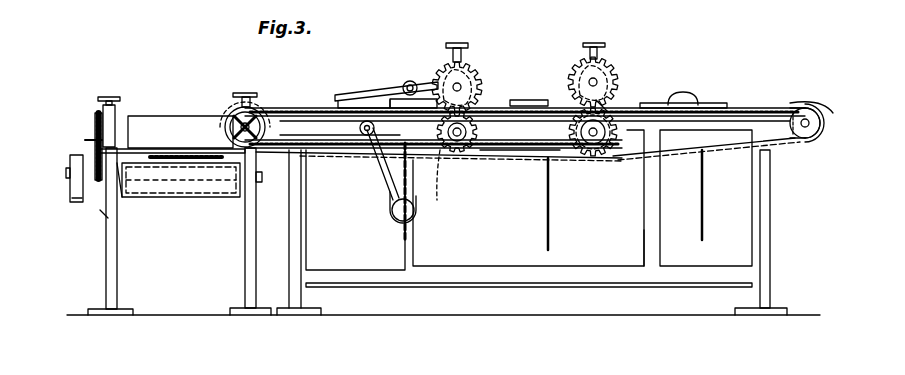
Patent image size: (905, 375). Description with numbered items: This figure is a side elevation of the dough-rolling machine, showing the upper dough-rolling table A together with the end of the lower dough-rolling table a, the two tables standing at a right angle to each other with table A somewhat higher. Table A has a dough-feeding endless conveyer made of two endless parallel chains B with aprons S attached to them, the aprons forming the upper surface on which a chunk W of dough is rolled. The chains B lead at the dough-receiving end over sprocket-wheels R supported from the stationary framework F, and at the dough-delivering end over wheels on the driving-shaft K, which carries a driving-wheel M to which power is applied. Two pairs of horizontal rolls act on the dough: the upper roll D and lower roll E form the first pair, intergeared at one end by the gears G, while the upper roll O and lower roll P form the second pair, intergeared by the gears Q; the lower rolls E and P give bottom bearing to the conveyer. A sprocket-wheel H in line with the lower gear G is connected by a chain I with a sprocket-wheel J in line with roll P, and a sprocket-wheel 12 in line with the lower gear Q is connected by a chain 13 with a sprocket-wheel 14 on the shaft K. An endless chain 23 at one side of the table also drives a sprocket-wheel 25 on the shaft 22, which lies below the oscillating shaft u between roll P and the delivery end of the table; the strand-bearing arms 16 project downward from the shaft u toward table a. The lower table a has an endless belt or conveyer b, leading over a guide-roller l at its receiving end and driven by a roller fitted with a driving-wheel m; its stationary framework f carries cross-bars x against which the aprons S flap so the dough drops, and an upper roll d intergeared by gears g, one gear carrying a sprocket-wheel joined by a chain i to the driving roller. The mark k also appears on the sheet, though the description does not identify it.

The stationary framework f is at (106, 270).
The sprocket-wheel 14 is at (262, 150).
The aprons S is at (160, 145).
The gears g is at (100, 124).
The arm k is at (100, 140).
The chain i is at (95, 156).
The driving-wheel m is at (78, 196).
The dough-rolling table a is at (108, 218).
The upper roll d is at (160, 116).
The cross-bars x is at (140, 148).
The chunk of dough W is at (197, 160).
The guide-roller l is at (119, 170).
The endless belt or conveyer b is at (168, 192).
The endless parallel chains B is at (318, 107).
The driving-wheel M is at (232, 110).
The driving-shaft K is at (232, 116).
The sprocket-wheels R is at (793, 140).
The strand-bearing arms 16 is at (360, 96).
The oscillating shaft u is at (408, 82).
The upper roll O is at (463, 62).
The sprocket-wheel J is at (470, 150).
The sprocket-wheel 12 is at (450, 152).
The upper roll D is at (610, 70).
The gears G is at (612, 100).
The lower roll E is at (612, 154).
The sprocket-wheel H is at (574, 158).
The chain I is at (522, 158).
The gears Q is at (463, 106).
The dough-rolling table A is at (622, 79).
The sprocket-wheel 25 is at (358, 128).
The endless chain 23 is at (340, 124).
The chain 13 is at (366, 150).
The lower roll P is at (422, 185).
The shaft 22 is at (397, 210).
The stationary framework F is at (652, 248).